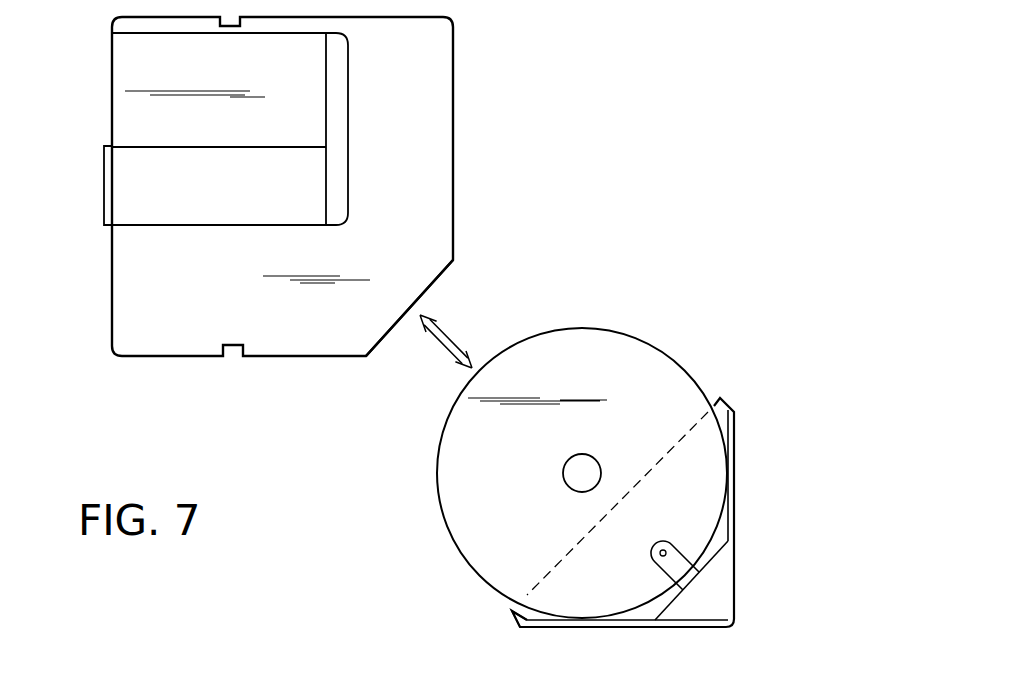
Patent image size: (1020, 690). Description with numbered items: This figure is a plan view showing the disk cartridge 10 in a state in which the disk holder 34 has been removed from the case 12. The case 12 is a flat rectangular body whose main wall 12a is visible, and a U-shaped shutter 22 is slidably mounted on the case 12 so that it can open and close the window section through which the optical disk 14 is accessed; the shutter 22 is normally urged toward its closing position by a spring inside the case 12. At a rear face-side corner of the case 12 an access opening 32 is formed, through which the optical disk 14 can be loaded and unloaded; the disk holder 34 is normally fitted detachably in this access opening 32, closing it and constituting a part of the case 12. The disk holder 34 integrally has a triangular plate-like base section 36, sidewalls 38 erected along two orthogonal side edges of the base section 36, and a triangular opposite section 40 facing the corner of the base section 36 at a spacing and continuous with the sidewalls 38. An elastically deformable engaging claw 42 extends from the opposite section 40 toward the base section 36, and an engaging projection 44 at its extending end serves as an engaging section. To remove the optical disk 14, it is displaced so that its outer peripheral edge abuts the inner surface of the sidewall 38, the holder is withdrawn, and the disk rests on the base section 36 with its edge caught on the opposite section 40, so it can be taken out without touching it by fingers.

The disk cartridge 10 is at (480, 98).
The case 12 is at (290, 358).
The main wall 12a is at (430, 55).
The shutter 22 is at (224, 200).
The access opening 32 is at (445, 273).
The optical disk 14 is at (587, 340).
The disk holder 34 is at (729, 392).
The base section 36 is at (525, 605).
The sidewall 38 is at (734, 498).
The opposite section 40 is at (718, 585).
The engaging claw 42 is at (687, 545).
The engaging projection 44 is at (651, 553).